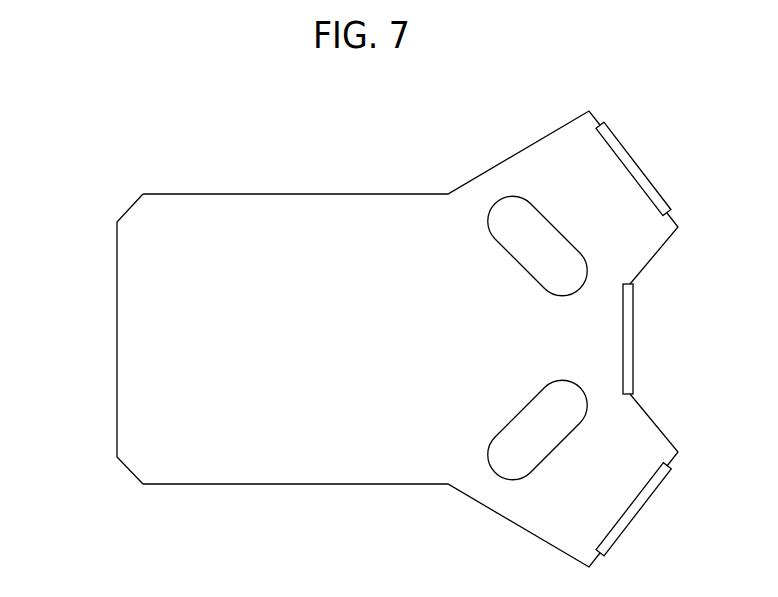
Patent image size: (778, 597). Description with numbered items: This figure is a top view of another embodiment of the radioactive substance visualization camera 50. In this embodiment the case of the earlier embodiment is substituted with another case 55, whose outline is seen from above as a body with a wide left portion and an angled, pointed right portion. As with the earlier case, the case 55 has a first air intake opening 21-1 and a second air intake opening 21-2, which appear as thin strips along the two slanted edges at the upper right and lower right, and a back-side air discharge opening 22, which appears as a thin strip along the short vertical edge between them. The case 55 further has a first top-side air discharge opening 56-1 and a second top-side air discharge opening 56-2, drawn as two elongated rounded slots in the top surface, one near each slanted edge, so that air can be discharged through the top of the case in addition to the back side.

The radioactive substance visualization camera 50 is at (422, 140).
The case 55 is at (117, 267).
The first top-side air discharge opening 56-1 is at (517, 197).
The second top-side air discharge opening 56-2 is at (502, 477).
The first air intake opening 21-1 is at (636, 165).
The second air intake opening 21-2 is at (620, 532).
The back-side air discharge opening 22 is at (633, 318).